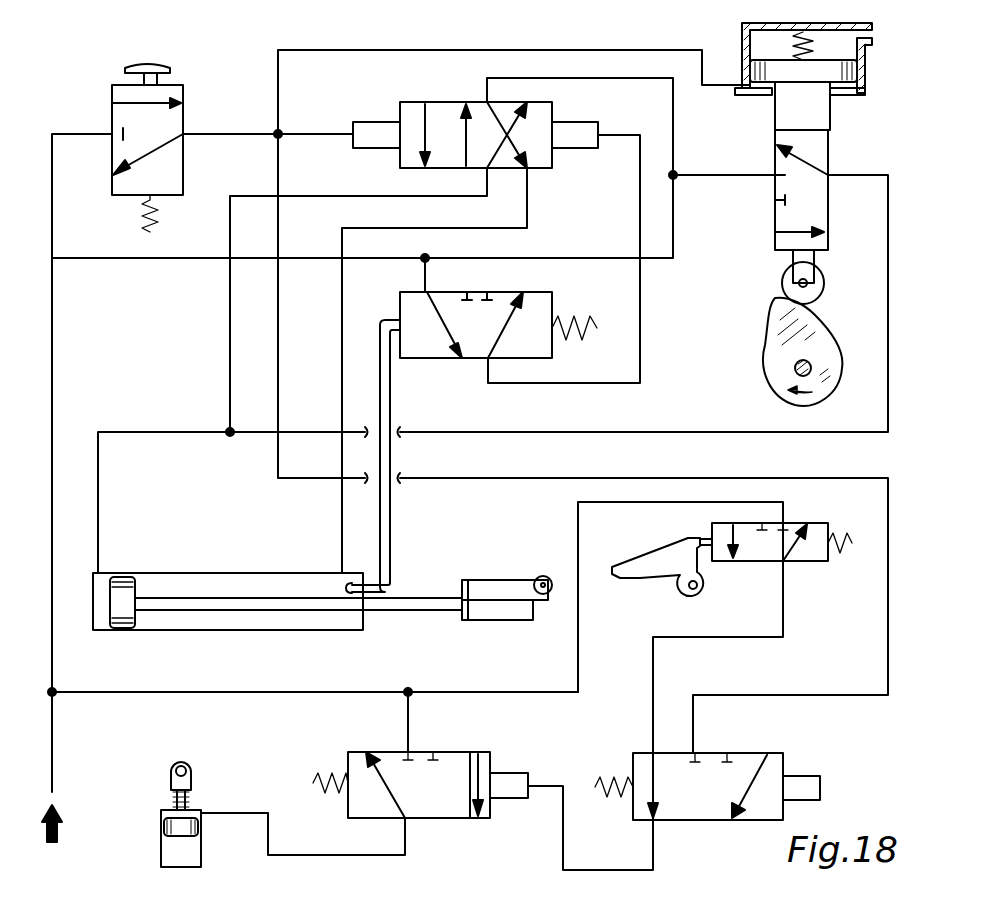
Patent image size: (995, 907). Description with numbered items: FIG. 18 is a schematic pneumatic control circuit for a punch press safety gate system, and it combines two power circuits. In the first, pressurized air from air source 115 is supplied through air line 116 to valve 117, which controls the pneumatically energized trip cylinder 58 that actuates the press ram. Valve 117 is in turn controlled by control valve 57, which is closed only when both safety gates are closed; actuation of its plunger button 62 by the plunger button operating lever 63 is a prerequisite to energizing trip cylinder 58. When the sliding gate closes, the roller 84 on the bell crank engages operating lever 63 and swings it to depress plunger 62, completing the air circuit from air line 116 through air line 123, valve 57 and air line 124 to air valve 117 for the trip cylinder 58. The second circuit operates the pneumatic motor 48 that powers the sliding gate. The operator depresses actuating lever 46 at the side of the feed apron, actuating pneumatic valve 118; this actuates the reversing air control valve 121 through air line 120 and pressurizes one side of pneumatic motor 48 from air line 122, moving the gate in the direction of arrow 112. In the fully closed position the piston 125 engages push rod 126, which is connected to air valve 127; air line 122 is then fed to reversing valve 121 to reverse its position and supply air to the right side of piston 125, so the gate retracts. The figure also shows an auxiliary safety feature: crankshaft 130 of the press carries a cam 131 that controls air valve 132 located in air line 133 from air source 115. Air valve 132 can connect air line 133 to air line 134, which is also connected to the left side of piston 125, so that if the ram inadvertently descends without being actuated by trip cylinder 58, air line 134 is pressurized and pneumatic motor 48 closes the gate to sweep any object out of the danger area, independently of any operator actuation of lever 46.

The actuating lever 46 is at (148, 62).
The pneumatic valve 118 is at (168, 115).
The air line 120 is at (267, 137).
The reversing air control valve 121 is at (440, 105).
The air line 122 is at (207, 260).
The air line 133 is at (56, 338).
The air valve 132 is at (820, 145).
The cam 131 is at (773, 308).
The crankshaft 130 is at (797, 366).
The air line 134 is at (703, 436).
The air valve 127 is at (440, 345).
The push rod 126 is at (392, 515).
The piston 125 is at (125, 580).
The arrow 112 is at (212, 640).
The roller 84 is at (545, 577).
The pneumatic motor 48 is at (356, 620).
The air line 116 is at (283, 690).
The air source 115 is at (55, 745).
The valve 117 is at (385, 752).
The air line 123 is at (532, 690).
The trip cylinder 58 is at (162, 845).
The air line 124 is at (617, 868).
The control valve 57 is at (818, 548).
The plunger button operating lever 63 is at (652, 560).
The plunger button 62 is at (707, 535).